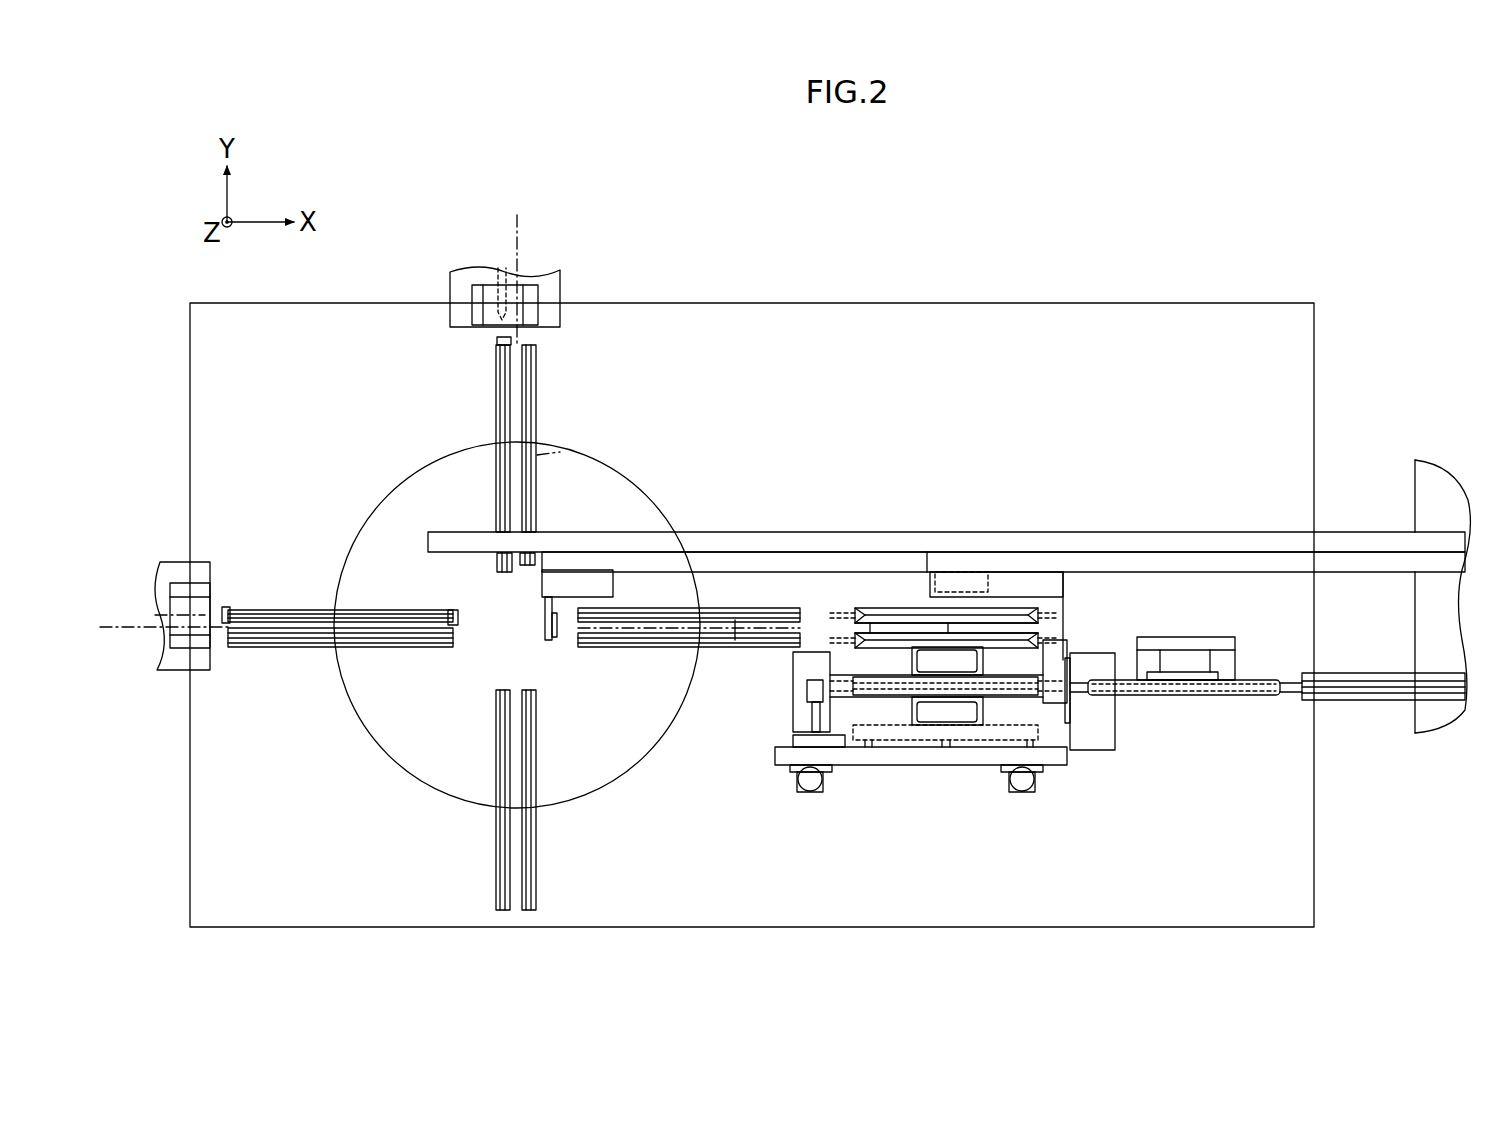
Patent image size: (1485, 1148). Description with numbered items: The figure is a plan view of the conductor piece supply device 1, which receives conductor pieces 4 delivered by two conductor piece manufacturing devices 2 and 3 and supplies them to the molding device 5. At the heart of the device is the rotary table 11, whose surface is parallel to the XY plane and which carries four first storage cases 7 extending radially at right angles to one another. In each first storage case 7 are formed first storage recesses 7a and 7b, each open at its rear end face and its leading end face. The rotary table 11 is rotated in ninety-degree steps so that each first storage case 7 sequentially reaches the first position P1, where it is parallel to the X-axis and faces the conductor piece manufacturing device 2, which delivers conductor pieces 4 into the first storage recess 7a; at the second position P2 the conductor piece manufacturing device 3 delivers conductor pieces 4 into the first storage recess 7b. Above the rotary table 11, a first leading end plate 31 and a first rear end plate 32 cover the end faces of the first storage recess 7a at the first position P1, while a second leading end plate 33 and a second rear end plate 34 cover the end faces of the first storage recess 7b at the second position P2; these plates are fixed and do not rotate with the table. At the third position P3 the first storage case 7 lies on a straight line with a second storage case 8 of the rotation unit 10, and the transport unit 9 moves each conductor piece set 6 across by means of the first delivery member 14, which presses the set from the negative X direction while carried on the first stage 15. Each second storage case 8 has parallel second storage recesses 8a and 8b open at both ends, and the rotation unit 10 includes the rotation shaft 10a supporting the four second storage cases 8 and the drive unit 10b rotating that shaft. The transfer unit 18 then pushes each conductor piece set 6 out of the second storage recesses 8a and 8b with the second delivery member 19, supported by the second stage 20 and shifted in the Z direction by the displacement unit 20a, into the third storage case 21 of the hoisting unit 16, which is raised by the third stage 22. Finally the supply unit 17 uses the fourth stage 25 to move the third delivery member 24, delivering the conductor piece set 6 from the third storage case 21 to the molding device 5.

The conductor piece supply device 1 is at (917, 211).
The conductor piece manufacturing device 2 is at (165, 680).
The conductor piece manufacturing device 3 is at (586, 288).
The conductor piece 4 is at (503, 300).
The molding device 5 is at (1403, 438).
The conductor piece set 6 is at (537, 455).
The first storage case 7 is at (514, 627).
The first storage recess 7a is at (537, 415).
The first storage recess 7b is at (512, 382).
The second storage case 8 is at (946, 657).
The second storage recess 8a is at (886, 608).
The second storage recess 8b is at (918, 633).
The transport unit 9 is at (529, 619).
The rotation unit 10 is at (1072, 740).
The rotation shaft 10a is at (990, 699).
The drive unit 10b is at (1100, 750).
The rotary table 11 is at (380, 500).
The first delivery member 14 is at (554, 620).
The first stage 15 is at (542, 582).
The hoisting unit 16 is at (1198, 717).
The supply unit 17 is at (1090, 598).
The transfer unit 18 is at (790, 768).
The second delivery member 19 is at (807, 690).
The second stage 20 is at (780, 743).
The displacement unit 20a is at (812, 716).
The third storage case 21 is at (1160, 698).
The third stage 22 is at (1183, 672).
The third delivery member 24 is at (1072, 706).
The fourth stage 25 is at (990, 588).
The first leading end plate 31 is at (452, 610).
The first rear end plate 32 is at (227, 607).
The second leading end plate 33 is at (497, 568).
The second rear end plate 34 is at (497, 340).
The first position P1 is at (127, 630).
The second position P2 is at (522, 262).
The third position P3 is at (757, 615).